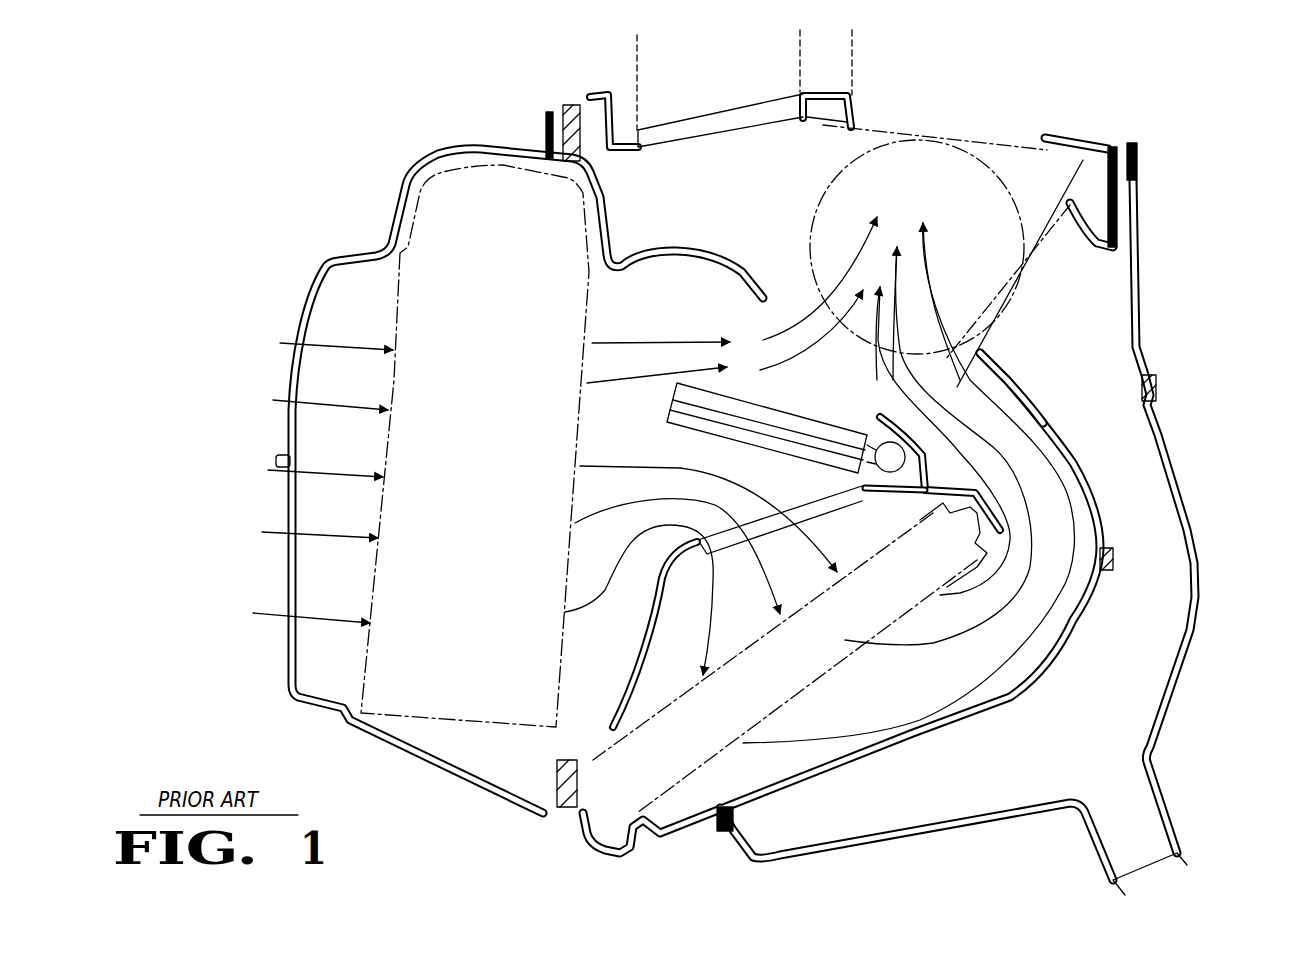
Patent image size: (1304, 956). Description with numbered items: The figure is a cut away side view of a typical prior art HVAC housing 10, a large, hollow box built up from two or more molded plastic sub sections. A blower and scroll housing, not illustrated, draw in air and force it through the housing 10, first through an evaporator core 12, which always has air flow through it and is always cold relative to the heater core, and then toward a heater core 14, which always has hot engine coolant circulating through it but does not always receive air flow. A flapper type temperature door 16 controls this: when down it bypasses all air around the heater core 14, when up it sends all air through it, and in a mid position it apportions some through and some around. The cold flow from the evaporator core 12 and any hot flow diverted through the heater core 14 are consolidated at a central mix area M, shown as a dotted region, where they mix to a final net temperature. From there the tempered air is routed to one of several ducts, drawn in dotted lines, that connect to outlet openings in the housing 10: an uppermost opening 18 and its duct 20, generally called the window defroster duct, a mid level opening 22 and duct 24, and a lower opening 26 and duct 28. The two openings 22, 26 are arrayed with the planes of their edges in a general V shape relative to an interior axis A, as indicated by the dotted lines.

The HVAC housing 10 is at (1142, 321).
The evaporator core 12 is at (573, 297).
The heater core 14 is at (933, 530).
The temperature door 16 is at (775, 413).
The uppermost opening 18 is at (783, 125).
The duct 20 is at (637, 62).
The mid level opening 22 is at (855, 121).
The duct 24 is at (853, 42).
The lower opening 26 is at (985, 355).
The duct 28 is at (1180, 862).
The central mix area M is at (850, 188).
The interior axis A is at (1082, 155).